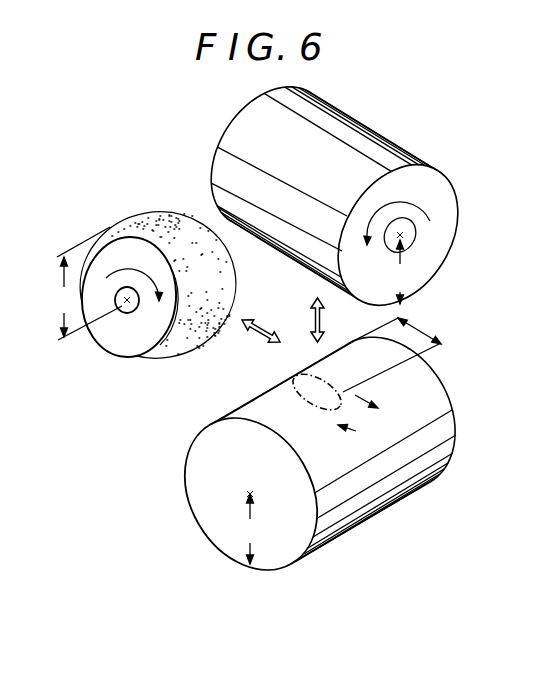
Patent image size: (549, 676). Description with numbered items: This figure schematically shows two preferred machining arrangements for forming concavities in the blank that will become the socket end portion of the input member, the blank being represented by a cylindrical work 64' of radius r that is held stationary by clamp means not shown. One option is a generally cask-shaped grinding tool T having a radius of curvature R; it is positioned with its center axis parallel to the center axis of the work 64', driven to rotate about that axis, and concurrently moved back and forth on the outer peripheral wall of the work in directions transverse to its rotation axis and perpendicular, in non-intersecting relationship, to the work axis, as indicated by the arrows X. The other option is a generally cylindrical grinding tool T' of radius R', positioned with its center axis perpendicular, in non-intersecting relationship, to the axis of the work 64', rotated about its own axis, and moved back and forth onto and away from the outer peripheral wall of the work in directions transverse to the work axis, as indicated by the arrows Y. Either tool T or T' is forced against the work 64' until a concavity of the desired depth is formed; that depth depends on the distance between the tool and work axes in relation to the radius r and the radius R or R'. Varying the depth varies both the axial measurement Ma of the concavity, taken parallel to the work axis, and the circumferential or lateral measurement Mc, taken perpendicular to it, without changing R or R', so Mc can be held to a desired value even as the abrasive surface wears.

The cask-shaped grinding tool T is at (158, 262).
The cylindrical grinding tool T' is at (346, 207).
The radius of curvature of the cask-shaped grinding tool R is at (87, 283).
The radius of the cylindrical grinding tool R' is at (400, 272).
The arrows indicating tool movement directions X is at (259, 330).
The arrows indicating tool movement directions Y is at (313, 318).
The cylindrical work 64' is at (307, 465).
The circumferential or lateral measurement of the concavity Mc is at (392, 355).
The axial measurement of the concavity Ma is at (365, 420).
The radius of the cylindrical work r is at (249, 527).